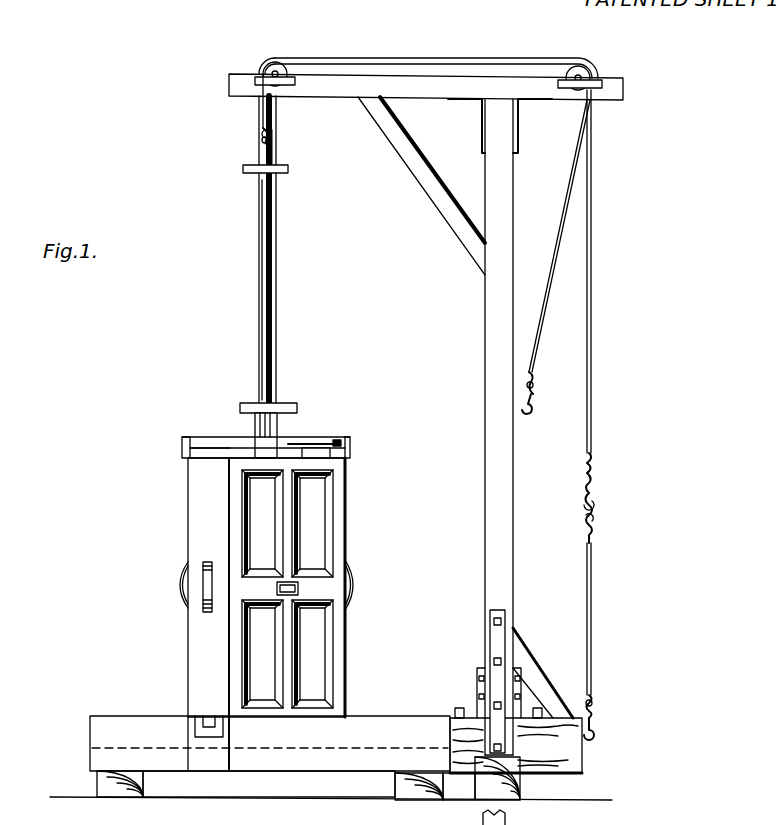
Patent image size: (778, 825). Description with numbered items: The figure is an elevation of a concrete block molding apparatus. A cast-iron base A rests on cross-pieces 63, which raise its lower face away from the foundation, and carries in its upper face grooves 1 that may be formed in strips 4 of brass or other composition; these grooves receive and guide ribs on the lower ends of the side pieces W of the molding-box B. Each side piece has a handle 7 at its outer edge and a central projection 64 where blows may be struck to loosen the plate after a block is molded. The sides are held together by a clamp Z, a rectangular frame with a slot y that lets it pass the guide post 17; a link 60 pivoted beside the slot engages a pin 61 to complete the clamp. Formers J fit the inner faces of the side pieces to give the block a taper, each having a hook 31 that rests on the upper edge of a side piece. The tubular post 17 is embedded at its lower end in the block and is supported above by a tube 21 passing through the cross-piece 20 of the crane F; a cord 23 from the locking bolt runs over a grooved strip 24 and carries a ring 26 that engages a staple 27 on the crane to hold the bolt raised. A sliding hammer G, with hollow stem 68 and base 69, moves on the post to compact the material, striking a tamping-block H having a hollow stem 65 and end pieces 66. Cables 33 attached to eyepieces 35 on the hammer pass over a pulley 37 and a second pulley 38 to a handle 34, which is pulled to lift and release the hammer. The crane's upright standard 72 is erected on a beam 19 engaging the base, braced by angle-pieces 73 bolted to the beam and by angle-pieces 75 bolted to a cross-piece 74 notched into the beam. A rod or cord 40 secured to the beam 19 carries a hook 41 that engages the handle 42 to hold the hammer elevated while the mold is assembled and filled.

The cross-piece 20 is at (229, 85).
The pulley 37 is at (266, 66).
The pulley 38 is at (596, 76).
The grooved strip 24 is at (495, 56).
The cord 23 is at (385, 56).
The cables or ropes 33 is at (316, 56).
The tube 21 is at (278, 112).
The eyepieces 35 is at (278, 150).
The guide or post 17 is at (276, 333).
The hollow stem 68 is at (262, 128).
The sliding hammer G is at (250, 144).
The base of hammer 69 is at (277, 179).
The end pieces 66 is at (297, 405).
The hollow stem 65 is at (279, 426).
The tamping-block H is at (256, 406).
The hook or projection 31 is at (182, 446).
The formers J is at (186, 438).
The clamp Z is at (200, 460).
The link 60 is at (322, 446).
The pin 61 is at (334, 455).
The molding-box B is at (251, 614).
The side pieces W is at (292, 587).
The slot y is at (320, 460).
The projection 64 is at (300, 586).
The handle 7 is at (206, 612).
The base A is at (90, 722).
The strips 4 is at (195, 729).
The grooves 1 is at (208, 716).
The cross-pieces 63 is at (100, 786).
The cross-piece 74 is at (522, 790).
The beam 19 is at (516, 745).
The upright post or standard 72 is at (513, 541).
The crane F is at (455, 240).
The angle-pieces 75 is at (492, 650).
The angle-pieces 73 is at (535, 673).
The ring 26 is at (532, 392).
The staple 27 is at (527, 416).
The handle 34 is at (596, 492).
The rod or cord 40 is at (605, 619).
The handle 42 is at (598, 712).
The hook 41 is at (599, 740).